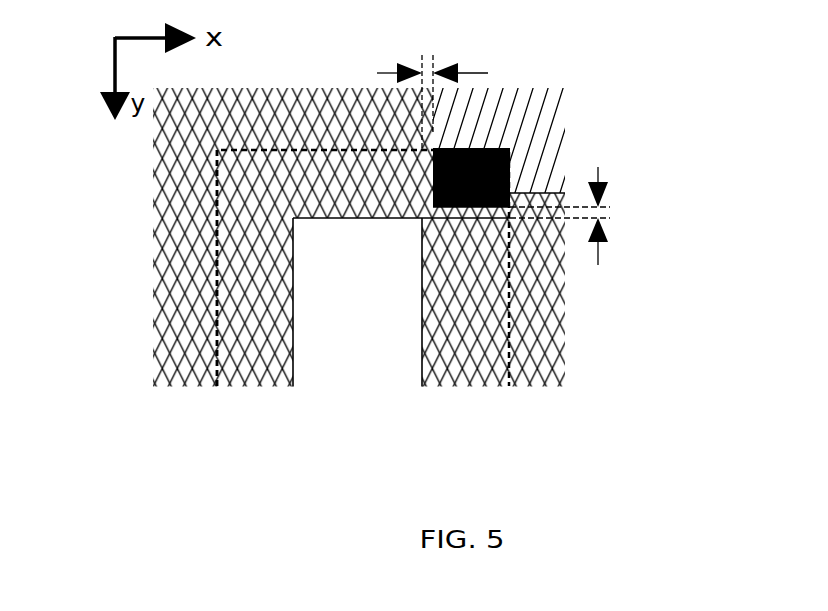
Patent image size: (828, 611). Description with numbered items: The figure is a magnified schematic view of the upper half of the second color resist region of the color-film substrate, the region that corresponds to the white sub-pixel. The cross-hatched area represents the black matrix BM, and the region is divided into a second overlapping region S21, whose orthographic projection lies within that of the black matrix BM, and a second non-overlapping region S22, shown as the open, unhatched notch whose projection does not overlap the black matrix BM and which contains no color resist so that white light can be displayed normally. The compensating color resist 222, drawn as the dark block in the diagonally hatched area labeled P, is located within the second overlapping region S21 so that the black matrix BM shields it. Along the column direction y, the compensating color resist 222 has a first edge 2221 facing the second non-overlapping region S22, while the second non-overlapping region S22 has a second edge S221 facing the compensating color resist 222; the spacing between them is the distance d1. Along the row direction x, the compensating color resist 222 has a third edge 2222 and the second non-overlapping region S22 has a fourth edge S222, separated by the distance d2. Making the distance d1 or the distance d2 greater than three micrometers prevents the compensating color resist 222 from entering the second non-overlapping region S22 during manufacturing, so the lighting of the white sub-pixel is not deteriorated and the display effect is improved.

The black matrix BM is at (197, 165).
The pixel region P is at (553, 141).
The compensating color resist 222 is at (511, 149).
The first edge 2221 is at (470, 208).
The third edge 2222 is at (423, 150).
The second overlapping region S21 is at (260, 362).
The second non-overlapping region S22 is at (348, 252).
The second edge S221 is at (340, 218).
The fourth edge S222 is at (422, 297).
The distance between the first edge and the second edge d1 is at (608, 217).
The distance between the third edge and the fourth edge d2 is at (432, 62).